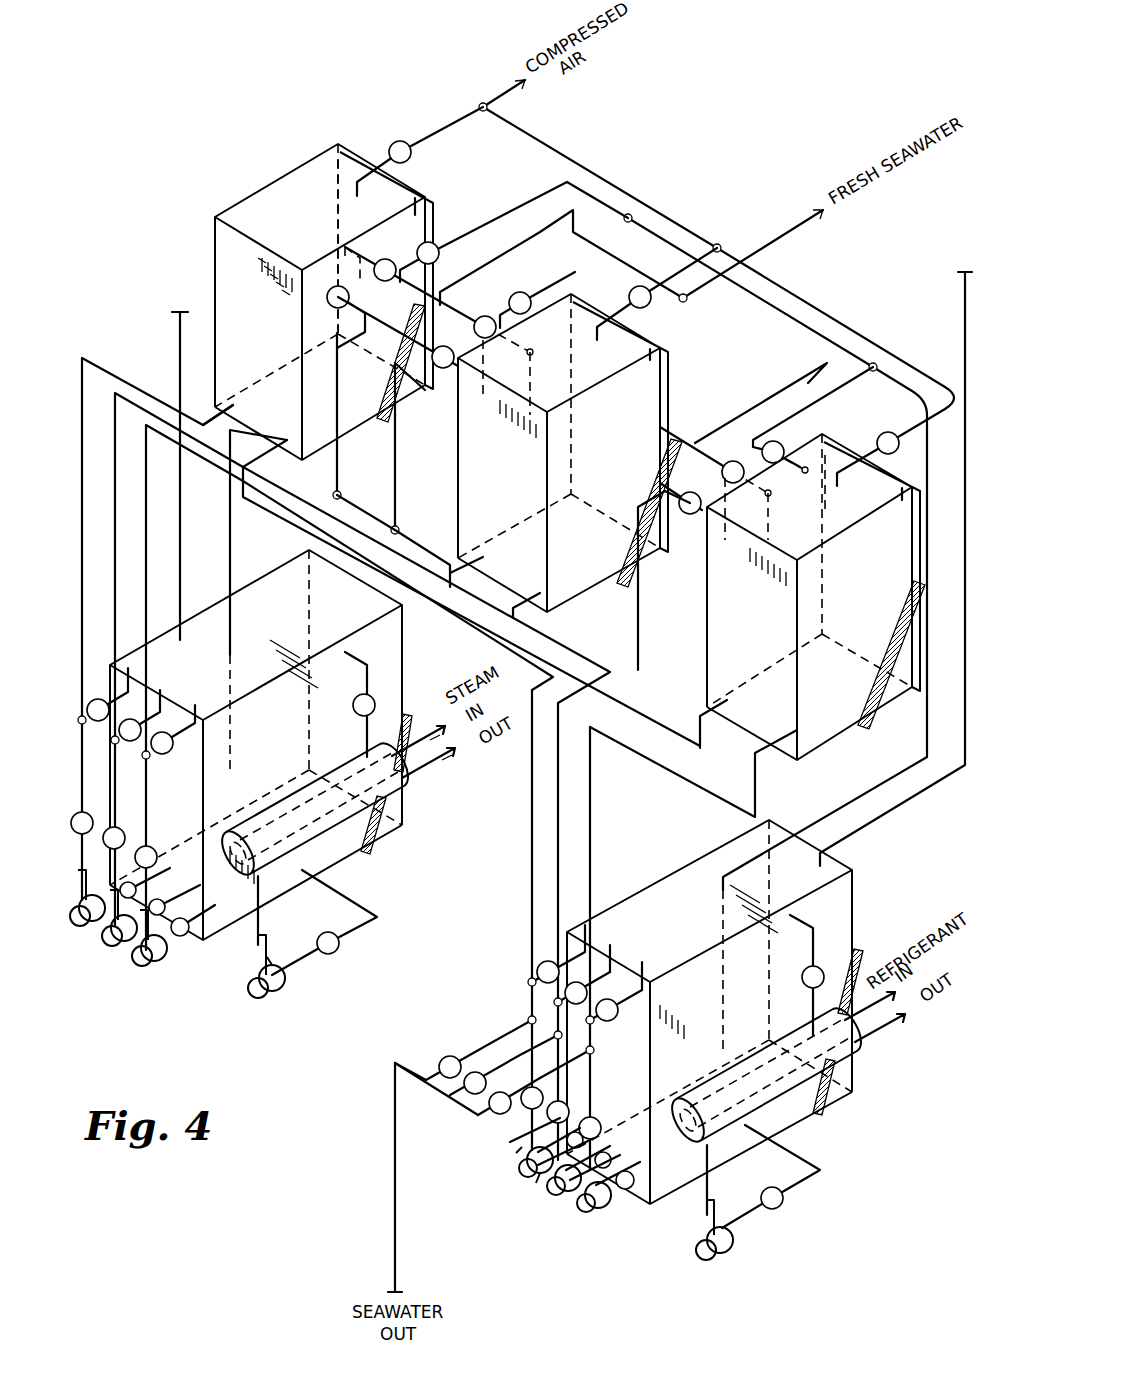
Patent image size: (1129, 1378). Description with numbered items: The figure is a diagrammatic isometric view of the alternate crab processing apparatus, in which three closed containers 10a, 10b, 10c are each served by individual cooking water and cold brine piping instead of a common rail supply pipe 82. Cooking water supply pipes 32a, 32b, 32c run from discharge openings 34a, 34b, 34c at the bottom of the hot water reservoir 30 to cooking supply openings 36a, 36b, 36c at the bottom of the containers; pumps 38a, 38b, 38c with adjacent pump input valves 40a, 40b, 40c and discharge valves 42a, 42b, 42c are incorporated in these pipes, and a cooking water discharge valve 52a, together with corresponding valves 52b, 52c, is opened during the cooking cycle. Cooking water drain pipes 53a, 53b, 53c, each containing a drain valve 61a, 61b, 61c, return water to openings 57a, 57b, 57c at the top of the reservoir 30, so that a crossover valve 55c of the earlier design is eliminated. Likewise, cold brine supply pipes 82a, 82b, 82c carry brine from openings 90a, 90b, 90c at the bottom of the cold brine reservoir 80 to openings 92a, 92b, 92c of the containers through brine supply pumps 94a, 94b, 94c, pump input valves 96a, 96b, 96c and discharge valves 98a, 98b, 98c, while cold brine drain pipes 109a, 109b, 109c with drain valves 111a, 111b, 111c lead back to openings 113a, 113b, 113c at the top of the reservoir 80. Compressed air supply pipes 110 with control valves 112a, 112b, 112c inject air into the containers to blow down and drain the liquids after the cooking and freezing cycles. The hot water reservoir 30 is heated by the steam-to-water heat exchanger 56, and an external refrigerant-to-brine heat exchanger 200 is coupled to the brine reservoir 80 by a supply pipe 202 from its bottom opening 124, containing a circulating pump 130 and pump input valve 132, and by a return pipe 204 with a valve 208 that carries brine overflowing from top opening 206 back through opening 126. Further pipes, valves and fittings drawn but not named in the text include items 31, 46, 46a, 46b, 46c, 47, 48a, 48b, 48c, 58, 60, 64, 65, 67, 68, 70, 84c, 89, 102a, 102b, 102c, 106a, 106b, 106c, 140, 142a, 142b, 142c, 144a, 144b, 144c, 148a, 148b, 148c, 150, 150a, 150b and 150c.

The closed container 10a is at (263, 205).
The closed container 10b is at (652, 388).
The closed container 10c is at (715, 619).
The hot water reservoir 30 is at (405, 676).
The cold brine reservoir 80 is at (840, 896).
The compressed air supply pipes 110 is at (551, 140).
The control valve 112a is at (402, 139).
The control valve 112b is at (650, 306).
The control valve 112c is at (900, 428).
The air line branch 84c is at (830, 378).
The opening 126 is at (817, 888).
The fresh seawater line 140 is at (780, 218).
The solenoid valve 106a is at (438, 242).
The solenoid valve 106b is at (530, 292).
The solenoid valve 106c is at (782, 428).
The inlet pipe 102a is at (422, 205).
The inlet pipe 102b is at (646, 350).
The inlet pipe 102c is at (895, 434).
The solenoid valve 142a is at (377, 240).
The solenoid valve 142b is at (478, 338).
The solenoid valve 142c is at (745, 475).
The drain pipe 144a is at (347, 251).
The drain pipe 144b is at (524, 363).
The drain pipe 144c is at (768, 503).
The pipe 48a is at (320, 297).
The pipe 48b is at (485, 405).
The pipe 48c is at (726, 542).
The cooking water discharge valve 52a is at (325, 305).
The solenoid valve line 52b is at (448, 373).
The solenoid valve line 52c is at (691, 512).
The pipe 46a is at (338, 380).
The pipe 46b is at (396, 474).
The pipe 46c is at (641, 594).
The pipe 46 is at (232, 552).
The pipe 47 is at (365, 506).
The cooking supply opening 36a is at (231, 406).
The cooking supply opening 36b is at (488, 557).
The cooking supply opening 36c is at (731, 694).
The opening 92a is at (287, 441).
The opening 92b is at (538, 590).
The opening 92c is at (788, 729).
The cooking water supply pipe 32a is at (80, 563).
The cooking water supply pipe 32b is at (113, 516).
The cooking water supply pipe 32c is at (142, 475).
The pipe 31 is at (176, 320).
The cold brine supply pipe 82a is at (532, 862).
The cold brine supply pipe 82b is at (558, 831).
The cold brine supply pipe 82c is at (590, 798).
The common rail supply pipe 82 is at (860, 810).
The pipe 89 is at (873, 824).
The cold brine drain pipe 109a is at (542, 952).
The cold brine drain pipe 109b is at (607, 970).
The cold brine drain pipe 109c is at (643, 990).
The drain valve 111a is at (548, 965).
The drain valve 111b is at (568, 990).
The drain valve 111c is at (595, 1008).
The opening 113a is at (585, 925).
The opening 113b is at (610, 947).
The opening 113c is at (645, 972).
The pump discharge valve 98a is at (550, 1090).
The pump discharge valve 98b is at (570, 1106).
The pump discharge valve 98c is at (594, 1120).
The opening 90a is at (592, 1132).
The opening 90b is at (597, 1153).
The opening 90c is at (644, 1195).
The pump input valve 96a is at (525, 1150).
The pump input valve 96b is at (628, 1153).
The pump input valve 96c is at (630, 1200).
The brine supply pump 94a is at (540, 1177).
The brine supply pump 94b is at (567, 1195).
The brine supply pump 94c is at (595, 1213).
The seawater outlet pipe 150 is at (395, 1156).
The solenoid valve 148a is at (440, 1062).
The solenoid valve 148b is at (470, 1090).
The solenoid valve 148c is at (498, 1112).
The pipe 150a is at (475, 1053).
The pipe 150b is at (535, 1075).
The pipe 150c is at (540, 1110).
The heat exchanger 56 is at (388, 824).
The steam pipes 68 is at (365, 765).
The pipe 70 is at (347, 650).
The solenoid valve 67 is at (373, 700).
The pipe 60 is at (332, 868).
The pipe 58 is at (365, 913).
The solenoid valve 65 is at (340, 946).
The pump 64 is at (280, 988).
The refrigerant-to-brine heat exchanger 200 is at (855, 1048).
The opening 206 is at (810, 1020).
The valve 208 is at (825, 928).
The return pipe 204 is at (845, 963).
The opening 124 is at (757, 1127).
The supply pipe 202 is at (813, 1173).
The pump input valve 132 is at (788, 1204).
The circulating pump 130 is at (738, 1242).
The opening 57a is at (98, 670).
The opening 57b is at (153, 715).
The opening 57c is at (200, 720).
The drain valve 61a is at (90, 698).
The drain valve 61b is at (133, 717).
The drain valve 61c is at (168, 735).
The cooking water drain pipe 53a is at (82, 732).
The cooking water drain pipe 53b is at (118, 745).
The cooking water drain pipe 53c is at (203, 740).
The crossover valve 55c is at (162, 750).
The pump discharge valve 42a is at (77, 815).
The pump discharge valve 42b is at (102, 837).
The pump discharge valve 42c is at (135, 857).
The discharge opening 34a is at (158, 863).
The discharge opening 34b is at (201, 887).
The discharge opening 34c is at (198, 928).
The pump input valve 40a is at (148, 883).
The pump input valve 40b is at (181, 910).
The pump input valve 40c is at (185, 937).
The pump 38a is at (82, 920).
The pump 38b is at (115, 942).
The pump 38c is at (145, 965).